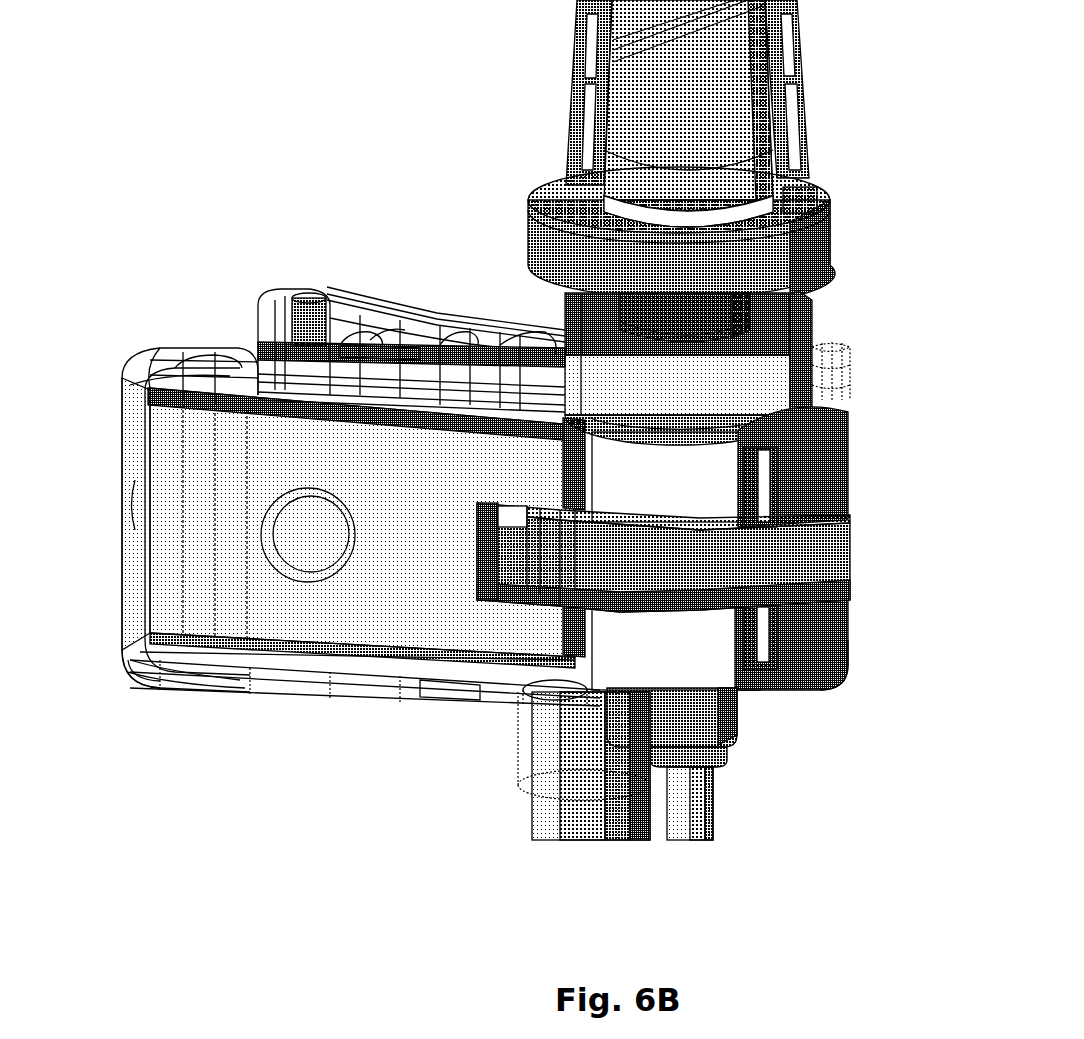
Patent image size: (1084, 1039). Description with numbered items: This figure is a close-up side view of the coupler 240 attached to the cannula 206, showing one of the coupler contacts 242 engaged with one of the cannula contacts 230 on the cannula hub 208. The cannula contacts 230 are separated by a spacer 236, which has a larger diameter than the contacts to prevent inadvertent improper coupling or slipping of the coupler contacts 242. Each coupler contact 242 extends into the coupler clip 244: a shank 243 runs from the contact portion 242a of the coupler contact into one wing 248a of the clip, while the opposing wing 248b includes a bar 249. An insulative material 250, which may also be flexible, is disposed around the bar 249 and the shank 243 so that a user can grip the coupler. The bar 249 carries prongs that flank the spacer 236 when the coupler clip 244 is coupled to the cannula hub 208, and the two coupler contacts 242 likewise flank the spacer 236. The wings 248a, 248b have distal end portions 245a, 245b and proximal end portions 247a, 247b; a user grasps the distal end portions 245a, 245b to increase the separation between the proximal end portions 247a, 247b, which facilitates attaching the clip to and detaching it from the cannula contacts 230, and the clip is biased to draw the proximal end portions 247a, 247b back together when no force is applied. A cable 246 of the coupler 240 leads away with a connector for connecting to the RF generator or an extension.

The cannula 206 is at (708, 828).
The cannula hub 208 is at (836, 248).
The cannula contacts 230 is at (680, 493).
The spacer 236 is at (856, 537).
The coupler 240 is at (372, 695).
The coupler contacts 242 is at (845, 473).
The contact portion 242a is at (848, 655).
The shank 243 is at (362, 352).
The coupler clip 244 is at (440, 312).
The distal end portion 245a is at (290, 290).
The distal end portion 245b is at (145, 685).
The cable 246 is at (535, 805).
The proximal end portion 247a is at (812, 350).
The proximal end portion 247b is at (530, 700).
The wing 248a is at (366, 300).
The wing 248b is at (430, 705).
The bar 249 is at (335, 632).
The insulative material 250 is at (172, 355).